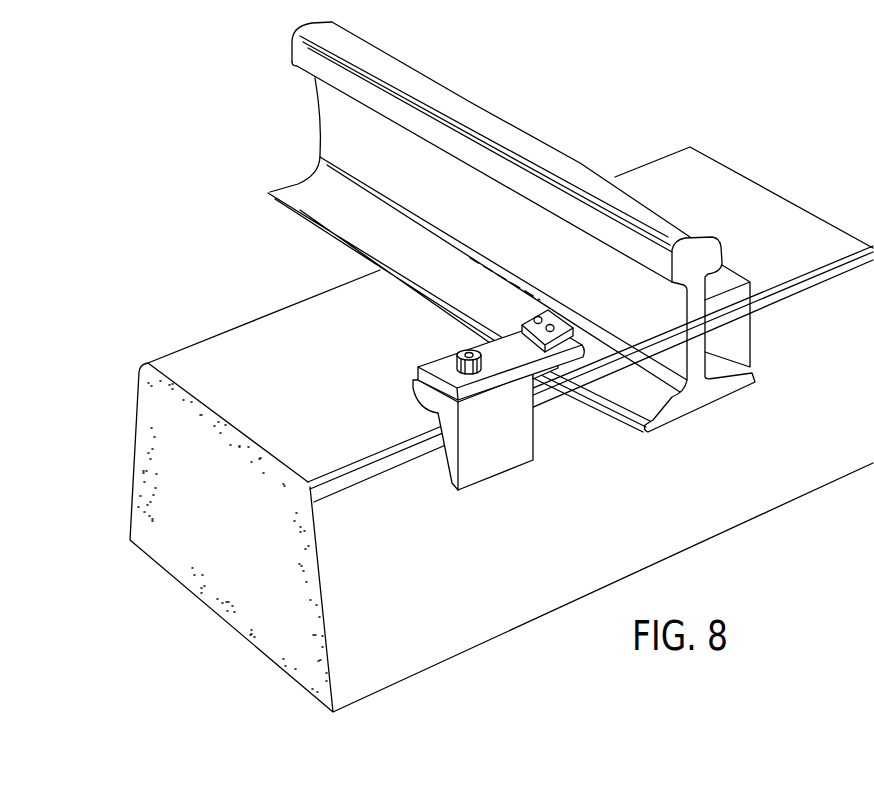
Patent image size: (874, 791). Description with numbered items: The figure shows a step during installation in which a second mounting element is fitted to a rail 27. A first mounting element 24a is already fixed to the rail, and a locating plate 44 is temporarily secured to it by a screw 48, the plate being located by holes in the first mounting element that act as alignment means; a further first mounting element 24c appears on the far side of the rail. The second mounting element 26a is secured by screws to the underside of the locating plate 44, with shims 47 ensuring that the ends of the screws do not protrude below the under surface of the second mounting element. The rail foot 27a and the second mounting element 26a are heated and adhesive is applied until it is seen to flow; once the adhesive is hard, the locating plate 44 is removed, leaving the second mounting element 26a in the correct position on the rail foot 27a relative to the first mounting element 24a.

The rail 27 is at (569, 149).
The rail foot 27a is at (646, 433).
The first mounting element 24a is at (508, 452).
The first mounting element 24c is at (737, 348).
The second mounting element 26a is at (563, 361).
The locating plate 44 is at (438, 362).
The shims 47 is at (553, 322).
The screw 48 is at (461, 350).